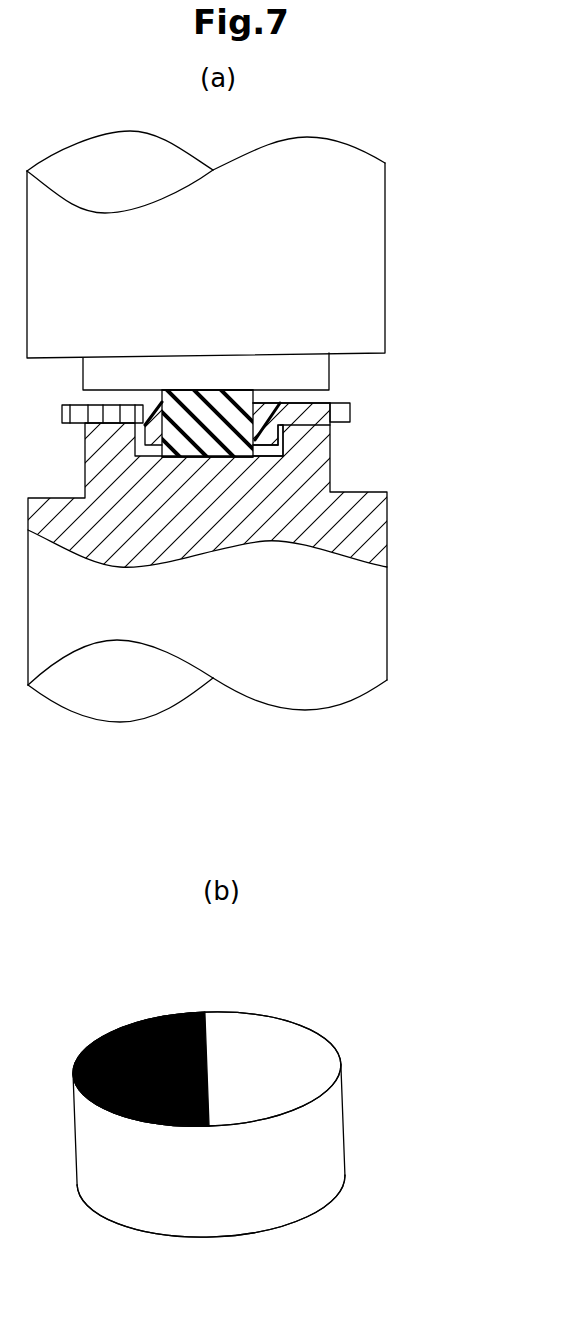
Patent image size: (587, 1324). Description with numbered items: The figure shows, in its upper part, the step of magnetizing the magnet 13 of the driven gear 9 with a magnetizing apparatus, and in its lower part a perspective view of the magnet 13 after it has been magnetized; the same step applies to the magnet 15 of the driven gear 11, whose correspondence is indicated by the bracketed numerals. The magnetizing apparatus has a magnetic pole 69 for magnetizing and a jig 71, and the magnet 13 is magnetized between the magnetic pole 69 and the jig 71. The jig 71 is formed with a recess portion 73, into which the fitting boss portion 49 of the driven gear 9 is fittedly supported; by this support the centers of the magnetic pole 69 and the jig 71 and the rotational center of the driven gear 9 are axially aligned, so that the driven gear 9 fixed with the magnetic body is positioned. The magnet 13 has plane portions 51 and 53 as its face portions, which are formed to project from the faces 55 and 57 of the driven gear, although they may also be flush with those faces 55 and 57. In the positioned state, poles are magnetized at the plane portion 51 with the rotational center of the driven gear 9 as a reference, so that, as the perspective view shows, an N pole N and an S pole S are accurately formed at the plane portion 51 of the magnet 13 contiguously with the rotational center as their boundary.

The magnetic pole 69 is at (368, 217).
The jig 71 is at (373, 642).
The magnet 13 is at (278, 774).
The magnet 15 is at (249, 390).
The driven gear 9 is at (276, 412).
The driven gear 11 is at (359, 414).
The plane portion 51 is at (193, 390).
The plane portion 53 is at (180, 464).
The face 55 is at (262, 396).
The recess portion 73 is at (270, 401).
The fitting boss portion 49 is at (280, 430).
The face 57 is at (268, 470).
The S pole S is at (139, 1021).
The N pole N is at (298, 1062).